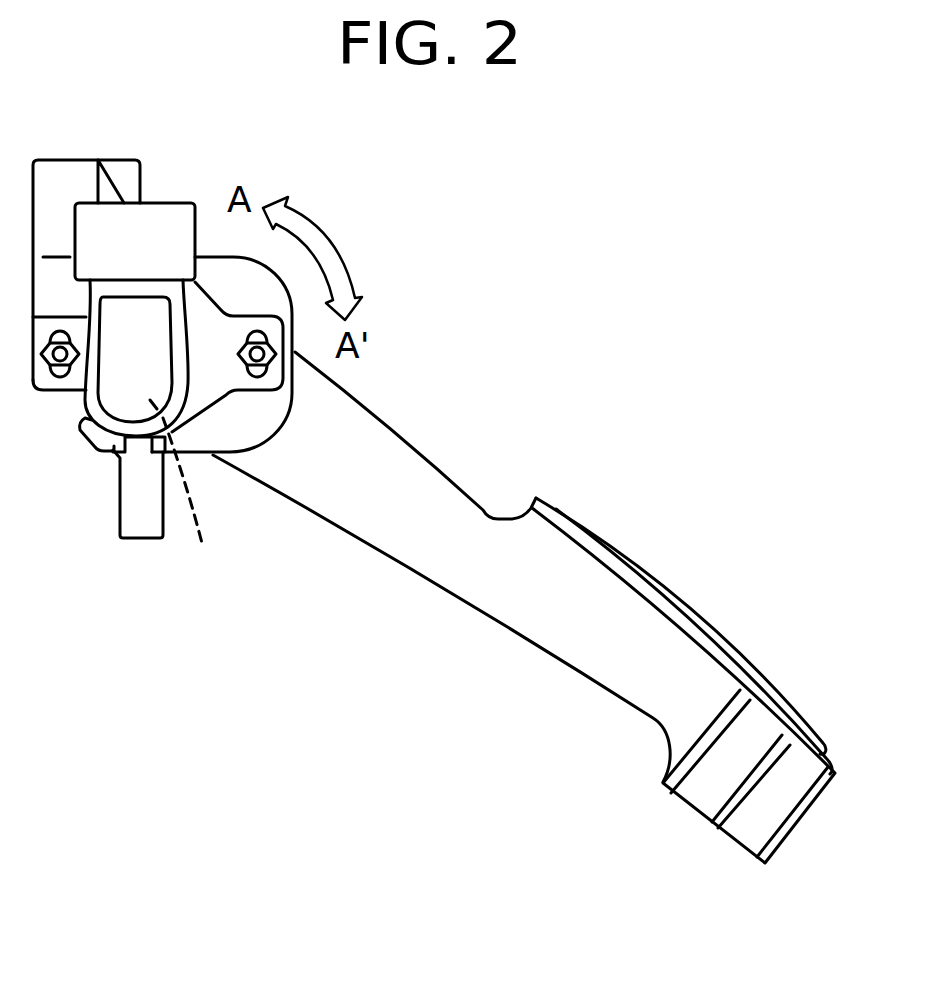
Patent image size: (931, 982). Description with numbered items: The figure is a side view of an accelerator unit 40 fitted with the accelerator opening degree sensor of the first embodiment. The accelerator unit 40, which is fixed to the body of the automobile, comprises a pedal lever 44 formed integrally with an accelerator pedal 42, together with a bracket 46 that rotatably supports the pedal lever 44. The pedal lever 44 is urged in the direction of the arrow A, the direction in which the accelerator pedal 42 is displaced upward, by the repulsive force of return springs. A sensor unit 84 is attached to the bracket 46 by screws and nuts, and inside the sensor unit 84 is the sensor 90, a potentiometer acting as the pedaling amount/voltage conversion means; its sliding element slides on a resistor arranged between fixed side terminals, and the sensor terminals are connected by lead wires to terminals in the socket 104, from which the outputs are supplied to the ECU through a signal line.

The accelerator unit 40 is at (468, 279).
The accelerator pedal 42 is at (728, 638).
The pedal lever 44 is at (427, 462).
The bracket 46 is at (73, 160).
The sensor unit 84 is at (85, 408).
The sensor 90 is at (196, 494).
The socket 104 is at (167, 203).